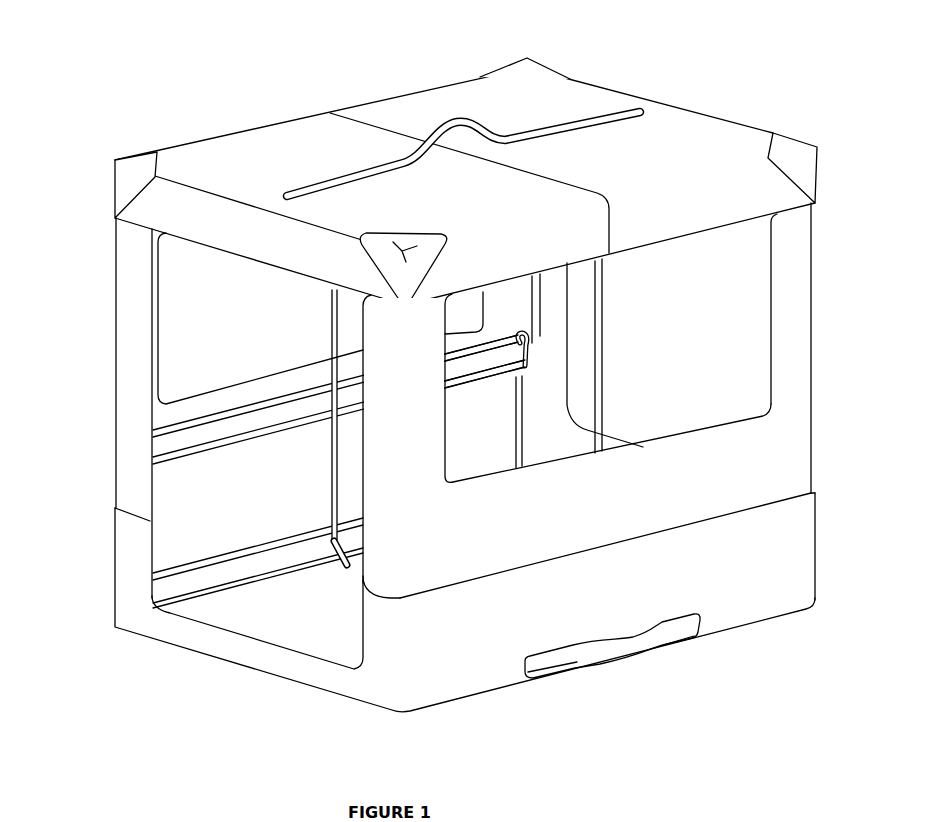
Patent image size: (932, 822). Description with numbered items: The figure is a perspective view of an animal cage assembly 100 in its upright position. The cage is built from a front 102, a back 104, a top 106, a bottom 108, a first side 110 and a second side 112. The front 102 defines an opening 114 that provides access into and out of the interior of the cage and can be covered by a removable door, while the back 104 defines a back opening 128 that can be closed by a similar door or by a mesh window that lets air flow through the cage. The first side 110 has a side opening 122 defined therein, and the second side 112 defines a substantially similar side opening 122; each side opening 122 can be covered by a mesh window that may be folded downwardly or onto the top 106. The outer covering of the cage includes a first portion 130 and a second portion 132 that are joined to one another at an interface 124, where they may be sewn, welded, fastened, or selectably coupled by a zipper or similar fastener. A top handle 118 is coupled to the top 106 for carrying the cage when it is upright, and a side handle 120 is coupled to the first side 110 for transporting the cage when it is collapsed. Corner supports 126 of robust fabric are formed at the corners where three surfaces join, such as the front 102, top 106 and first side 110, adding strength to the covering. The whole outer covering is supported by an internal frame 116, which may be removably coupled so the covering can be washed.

The animal cage assembly 100 is at (172, 74).
The front 102 is at (132, 320).
The back 104 is at (811, 272).
The top 106 is at (673, 130).
The bottom 108 is at (474, 696).
The first side 110 is at (786, 453).
The second side 112 is at (118, 268).
The opening 114 is at (200, 493).
The internal frame 116 is at (333, 353).
The top handle 118 is at (452, 128).
The side handle 120 is at (622, 655).
The side opening 122 is at (249, 287).
The interface 124 is at (598, 553).
The corner supports 126 is at (535, 62).
The back opening 128 is at (678, 298).
The first portion 130 is at (795, 362).
The second portion 132 is at (790, 550).